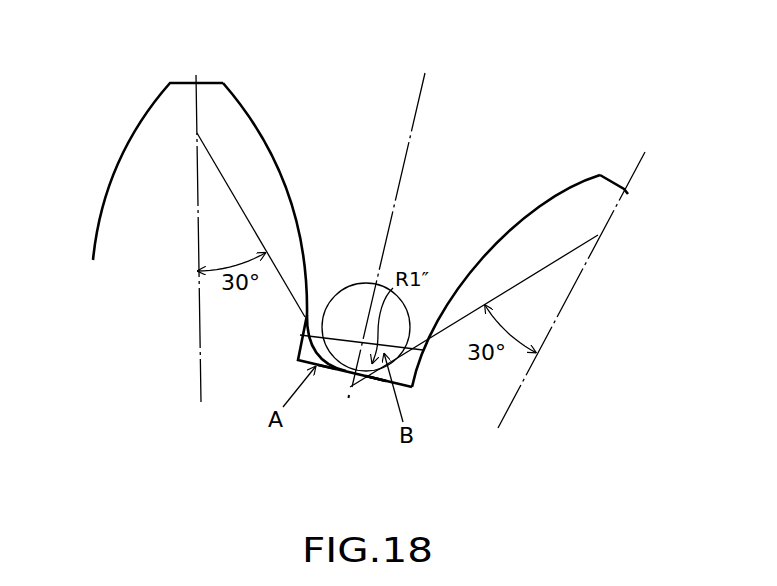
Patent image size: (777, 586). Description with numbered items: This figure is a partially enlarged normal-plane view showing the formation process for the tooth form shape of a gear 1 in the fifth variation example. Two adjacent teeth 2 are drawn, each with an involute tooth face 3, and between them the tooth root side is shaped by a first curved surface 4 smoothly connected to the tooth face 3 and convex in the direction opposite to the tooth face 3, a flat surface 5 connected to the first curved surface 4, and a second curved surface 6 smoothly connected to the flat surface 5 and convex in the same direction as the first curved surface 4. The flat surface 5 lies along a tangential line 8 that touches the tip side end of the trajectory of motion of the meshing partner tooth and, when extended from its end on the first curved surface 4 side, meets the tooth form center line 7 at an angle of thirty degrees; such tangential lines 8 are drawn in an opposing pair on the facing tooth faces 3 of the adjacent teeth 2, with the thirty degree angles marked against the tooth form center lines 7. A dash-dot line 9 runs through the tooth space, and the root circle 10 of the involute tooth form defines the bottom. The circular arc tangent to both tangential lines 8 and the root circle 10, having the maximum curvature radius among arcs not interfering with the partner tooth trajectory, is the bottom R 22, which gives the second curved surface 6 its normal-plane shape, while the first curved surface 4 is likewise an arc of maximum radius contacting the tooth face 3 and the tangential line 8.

The gear 1 is at (320, 130).
The tooth 2 is at (132, 131).
The tooth face 3 is at (308, 234).
The first curved surface 4 is at (307, 316).
The flat surface 5 is at (297, 351).
The second curved surface 6 is at (367, 414).
The tooth form center line 7 is at (199, 333).
The tangential line 8 is at (236, 193).
The tooth space center line 9 is at (408, 146).
The root circle 10 is at (328, 371).
The bottom R 22 is at (376, 376).